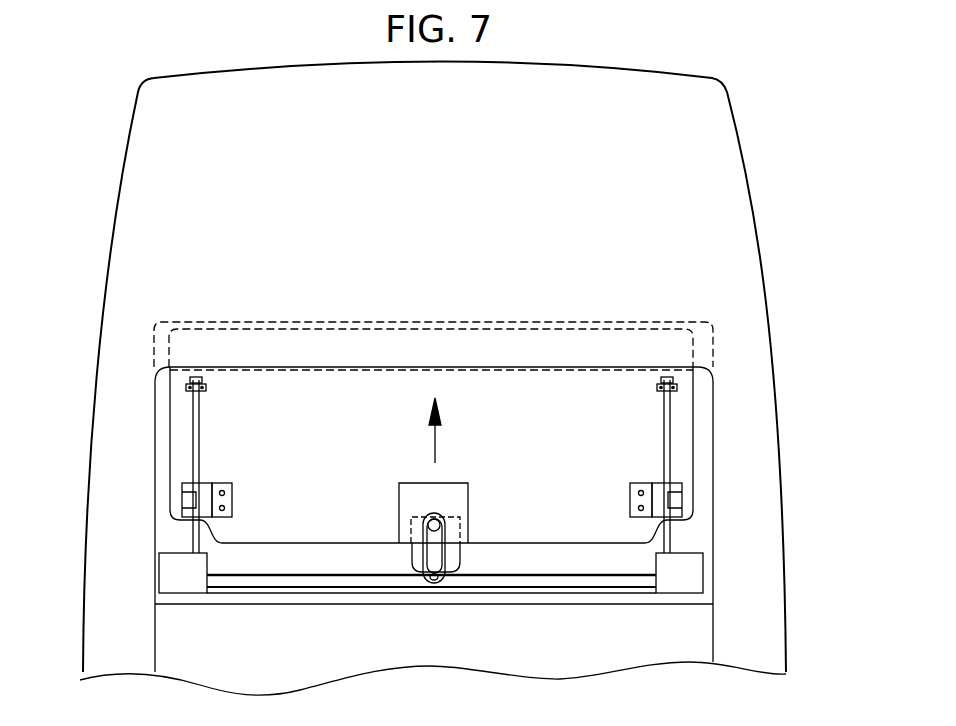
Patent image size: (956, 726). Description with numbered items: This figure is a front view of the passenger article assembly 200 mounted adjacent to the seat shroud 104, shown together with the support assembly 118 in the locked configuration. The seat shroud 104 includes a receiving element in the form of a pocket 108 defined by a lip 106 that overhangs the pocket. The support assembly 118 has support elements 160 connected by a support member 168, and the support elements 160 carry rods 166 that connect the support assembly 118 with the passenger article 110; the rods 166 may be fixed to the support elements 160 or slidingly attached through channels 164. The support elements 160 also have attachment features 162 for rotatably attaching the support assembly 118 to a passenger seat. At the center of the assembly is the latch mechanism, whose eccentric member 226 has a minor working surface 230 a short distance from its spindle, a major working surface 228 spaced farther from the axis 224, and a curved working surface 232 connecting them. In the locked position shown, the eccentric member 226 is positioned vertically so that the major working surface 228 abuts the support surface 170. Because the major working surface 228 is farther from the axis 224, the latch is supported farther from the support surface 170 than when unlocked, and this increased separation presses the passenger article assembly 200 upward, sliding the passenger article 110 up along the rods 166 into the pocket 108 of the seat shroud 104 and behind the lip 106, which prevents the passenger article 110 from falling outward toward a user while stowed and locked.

The seat shroud 104 is at (112, 217).
The lip 106 is at (633, 367).
The pocket 108 is at (270, 322).
The passenger article 110 is at (130, 428).
The support assembly 118 is at (133, 563).
The passenger article assembly 200 is at (480, 290).
The support elements 160 is at (682, 588).
The attachment features 162 is at (705, 577).
The channels 164 is at (670, 552).
The rods 166 is at (670, 534).
The support member 168 is at (275, 583).
The support surface 170 is at (320, 580).
The axis 224 is at (443, 520).
The eccentric member 226 is at (403, 567).
The major working surface 228 is at (422, 590).
The minor working surface 230 is at (410, 550).
The curved working surface 232 is at (418, 567).